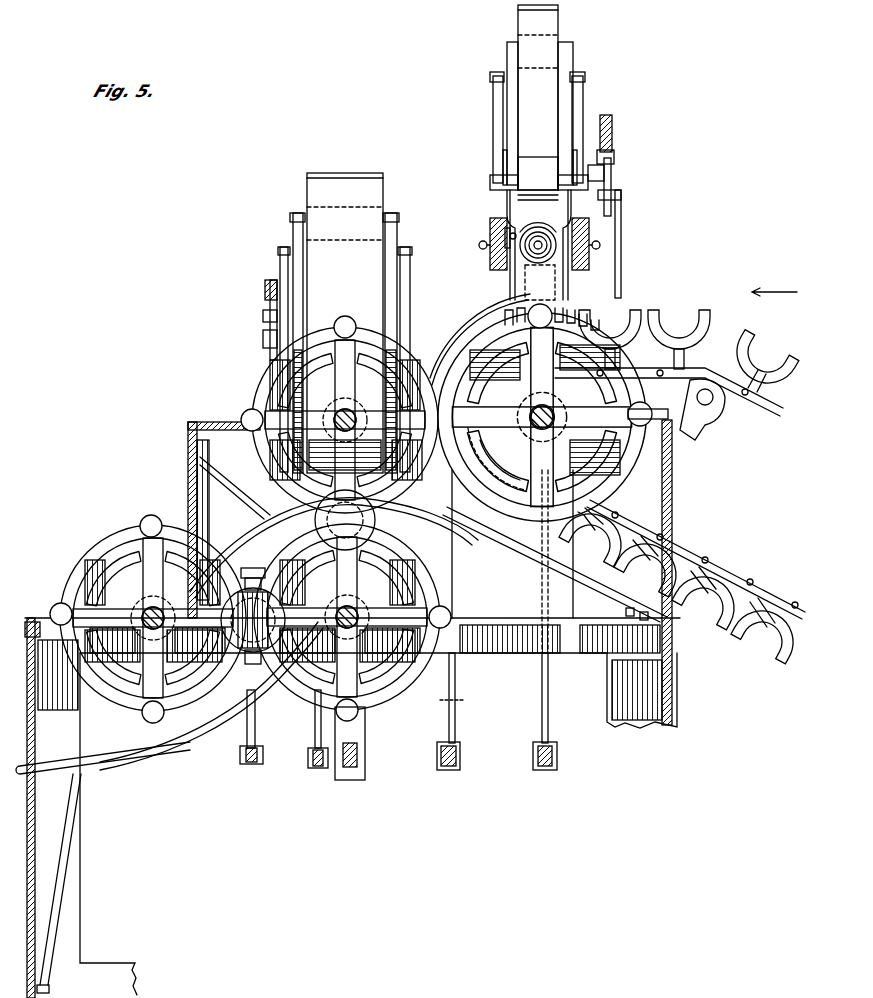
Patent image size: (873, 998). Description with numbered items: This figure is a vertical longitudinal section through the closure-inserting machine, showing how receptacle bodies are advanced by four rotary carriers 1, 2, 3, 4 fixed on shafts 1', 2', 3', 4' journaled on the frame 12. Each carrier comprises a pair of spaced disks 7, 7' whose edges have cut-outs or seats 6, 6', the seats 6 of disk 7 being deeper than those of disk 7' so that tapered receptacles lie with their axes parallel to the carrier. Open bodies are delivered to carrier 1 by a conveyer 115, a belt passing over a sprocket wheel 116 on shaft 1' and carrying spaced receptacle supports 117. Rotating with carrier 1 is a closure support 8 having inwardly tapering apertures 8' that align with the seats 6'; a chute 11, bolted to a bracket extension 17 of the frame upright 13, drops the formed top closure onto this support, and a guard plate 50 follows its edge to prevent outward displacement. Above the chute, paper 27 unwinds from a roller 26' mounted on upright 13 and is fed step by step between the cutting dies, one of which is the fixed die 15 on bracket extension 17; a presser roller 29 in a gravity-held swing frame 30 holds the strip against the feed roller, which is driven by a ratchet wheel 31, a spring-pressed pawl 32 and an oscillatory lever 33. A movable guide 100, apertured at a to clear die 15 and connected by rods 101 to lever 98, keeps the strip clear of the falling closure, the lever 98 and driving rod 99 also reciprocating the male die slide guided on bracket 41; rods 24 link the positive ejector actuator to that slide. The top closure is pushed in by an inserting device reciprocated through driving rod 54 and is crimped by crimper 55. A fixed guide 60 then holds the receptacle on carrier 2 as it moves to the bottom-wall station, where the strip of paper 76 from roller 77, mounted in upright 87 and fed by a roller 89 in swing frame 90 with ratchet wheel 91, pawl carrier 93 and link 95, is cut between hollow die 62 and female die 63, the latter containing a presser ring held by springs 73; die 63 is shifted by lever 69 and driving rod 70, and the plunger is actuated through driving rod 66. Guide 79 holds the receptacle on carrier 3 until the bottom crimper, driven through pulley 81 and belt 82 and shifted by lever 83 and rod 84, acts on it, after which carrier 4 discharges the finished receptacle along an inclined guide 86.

The rotary carrier 1 is at (553, 414).
The shaft 1' is at (556, 413).
The rotary carrier 2 is at (316, 414).
The shaft 2' is at (360, 420).
The rotary carrier 3 is at (352, 622).
The shaft 3' is at (362, 616).
The rotary carrier 4 is at (138, 619).
The shaft 4' is at (138, 599).
The seat 6 is at (308, 481).
The seat 6' is at (211, 521).
The disk 7 is at (342, 530).
The disk 7' is at (547, 534).
The closure support 8 is at (696, 499).
The tapering aperture 8' is at (599, 355).
The chute 11 is at (560, 292).
The frame 12 is at (680, 695).
The upright 13 is at (566, 68).
The die 15 is at (510, 137).
The bracket extension 17 is at (590, 232).
The rods 24 is at (480, 244).
The roller 26' is at (566, 25).
The roll of paper 27 is at (528, 20).
The presser roller 29 is at (539, 178).
The swing frame 30 is at (496, 108).
The ratchet wheel 31 is at (611, 170).
The driving pawl 32 is at (614, 148).
The oscillatory lever 33 is at (612, 125).
The bracket 41 is at (575, 615).
The guard plate 50 is at (584, 104).
The driving rod 54 is at (621, 275).
The crimper 55 is at (442, 578).
The fixed guide 60 is at (445, 538).
The hollow die 62 is at (374, 523).
The female die 63 is at (392, 610).
The driving rod 66 is at (352, 780).
The shifting lever 69 is at (316, 725).
The driving rod 70 is at (318, 768).
The springs 73 is at (253, 621).
The strip of paper 76 is at (336, 290).
The roller 77 is at (385, 208).
The fixed guide 79 is at (270, 516).
The pulley 81 is at (253, 566).
The belt 82 is at (165, 752).
The shifter lever 83 is at (256, 712).
The driving rod 84 is at (252, 766).
The inclined guide 86 is at (210, 735).
The frame upright 87 is at (296, 240).
The roller 89 is at (323, 377).
The swing frame 90 is at (410, 290).
The ratchet wheel 91 is at (263, 338).
The pawl carrier 93 is at (266, 320).
The link 95 is at (268, 285).
The lever 98 is at (549, 700).
The driving rod 99 is at (558, 750).
The movable guide 100 is at (510, 218).
The rods 101 is at (495, 258).
The conveyer 115 is at (776, 416).
The sprocket wheel 116 is at (496, 459).
The receptacle supports 117 is at (758, 330).
The aperture a is at (552, 228).